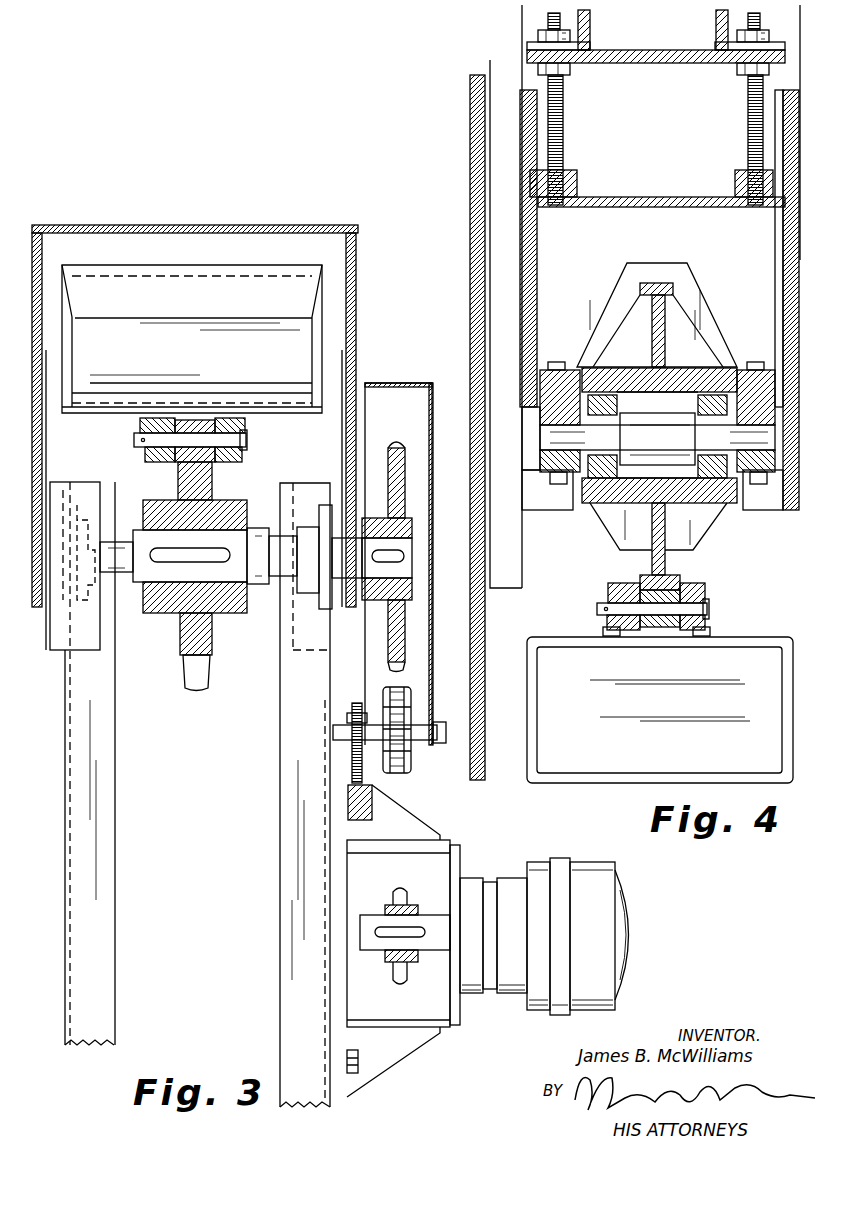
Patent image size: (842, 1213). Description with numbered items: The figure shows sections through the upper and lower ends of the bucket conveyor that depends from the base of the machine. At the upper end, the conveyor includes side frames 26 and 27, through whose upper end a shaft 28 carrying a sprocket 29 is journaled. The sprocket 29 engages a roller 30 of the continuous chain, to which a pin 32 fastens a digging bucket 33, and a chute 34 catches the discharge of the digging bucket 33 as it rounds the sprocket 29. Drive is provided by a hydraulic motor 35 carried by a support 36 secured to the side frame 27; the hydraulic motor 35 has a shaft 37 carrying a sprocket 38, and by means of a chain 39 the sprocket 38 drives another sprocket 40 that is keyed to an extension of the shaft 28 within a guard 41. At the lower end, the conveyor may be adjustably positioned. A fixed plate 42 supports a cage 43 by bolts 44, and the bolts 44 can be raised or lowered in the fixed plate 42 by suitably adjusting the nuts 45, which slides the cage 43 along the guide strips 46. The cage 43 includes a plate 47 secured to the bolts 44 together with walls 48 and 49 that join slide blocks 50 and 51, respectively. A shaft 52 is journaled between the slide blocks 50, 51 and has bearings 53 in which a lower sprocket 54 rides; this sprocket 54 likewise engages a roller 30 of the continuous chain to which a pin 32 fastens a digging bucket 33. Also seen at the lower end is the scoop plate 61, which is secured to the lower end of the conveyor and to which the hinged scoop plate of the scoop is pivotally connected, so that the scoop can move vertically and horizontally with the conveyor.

In FIG. 3, the side frame 26 is at (78, 676).
In FIG. 4, the side frame 26 is at (520, 30).
In FIG. 3, the side frame 27 is at (330, 690).
In FIG. 4, the side frame 27 is at (790, 80).
In FIG. 3, the shaft 28 is at (270, 546).
In FIG. 3, the sprocket 29 is at (208, 485).
In FIG. 3, the roller 30 is at (178, 465).
In FIG. 4, the roller 30 is at (680, 590).
In FIG. 3, the pin 32 is at (238, 443).
In FIG. 4, the pin 32 is at (600, 603).
In FIG. 3, the digging bucket 33 is at (300, 262).
In FIG. 4, the digging bucket 33 is at (540, 640).
In FIG. 3, the chute 34 is at (357, 237).
In FIG. 3, the hydraulic motor 35 is at (585, 862).
In FIG. 3, the support 36 is at (455, 860).
In FIG. 3, the shaft 37 is at (370, 950).
In FIG. 3, the sprocket 38 is at (400, 892).
In FIG. 3, the chain 39 is at (400, 774).
In FIG. 3, the sprocket 40 is at (400, 516).
In FIG. 3, the guard 41 is at (400, 383).
In FIG. 4, the fixed plate 42 is at (683, 64).
In FIG. 4, the cage 43 is at (606, 215).
In FIG. 4, the bolts 44 is at (563, 132).
In FIG. 4, the nuts 45 is at (578, 42).
In FIG. 4, the guide strips 46 is at (541, 510).
In FIG. 4, the plate 47 is at (700, 215).
In FIG. 4, the wall 48 is at (538, 262).
In FIG. 4, the wall 49 is at (778, 258).
In FIG. 4, the slide block 50 is at (570, 372).
In FIG. 4, the slide block 51 is at (765, 372).
In FIG. 4, the shaft 52 is at (680, 458).
In FIG. 4, the bearings 53 is at (698, 404).
In FIG. 4, the sprocket 54 is at (668, 293).
In FIG. 4, the scoop plate 61 is at (478, 644).